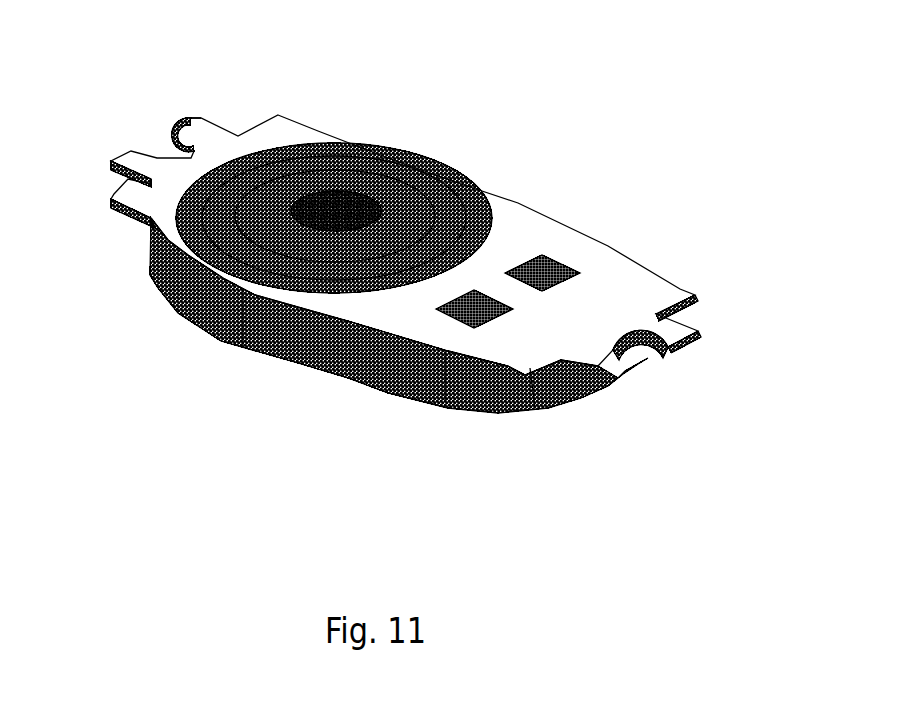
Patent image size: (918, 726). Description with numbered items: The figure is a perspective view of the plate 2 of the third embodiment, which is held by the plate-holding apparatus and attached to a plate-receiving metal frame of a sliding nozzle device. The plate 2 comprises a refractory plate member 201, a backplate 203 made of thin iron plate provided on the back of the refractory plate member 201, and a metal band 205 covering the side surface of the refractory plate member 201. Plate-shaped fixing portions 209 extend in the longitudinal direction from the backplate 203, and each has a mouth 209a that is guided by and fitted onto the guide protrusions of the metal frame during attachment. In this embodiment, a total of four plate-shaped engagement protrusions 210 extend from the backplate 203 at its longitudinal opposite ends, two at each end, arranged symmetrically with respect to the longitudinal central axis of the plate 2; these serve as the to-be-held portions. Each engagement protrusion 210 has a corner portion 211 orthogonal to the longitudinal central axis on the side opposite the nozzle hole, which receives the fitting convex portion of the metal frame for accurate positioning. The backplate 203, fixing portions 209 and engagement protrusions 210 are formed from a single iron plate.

The plate 2 is at (431, 258).
The refractory plate member 201 is at (448, 162).
The backplate 203 is at (547, 230).
The metal band 205 is at (370, 377).
The fixing portion 209 is at (193, 117).
The mouth 209a is at (153, 127).
The engagement protrusion 210 is at (276, 112).
The corner portion 211 is at (268, 107).